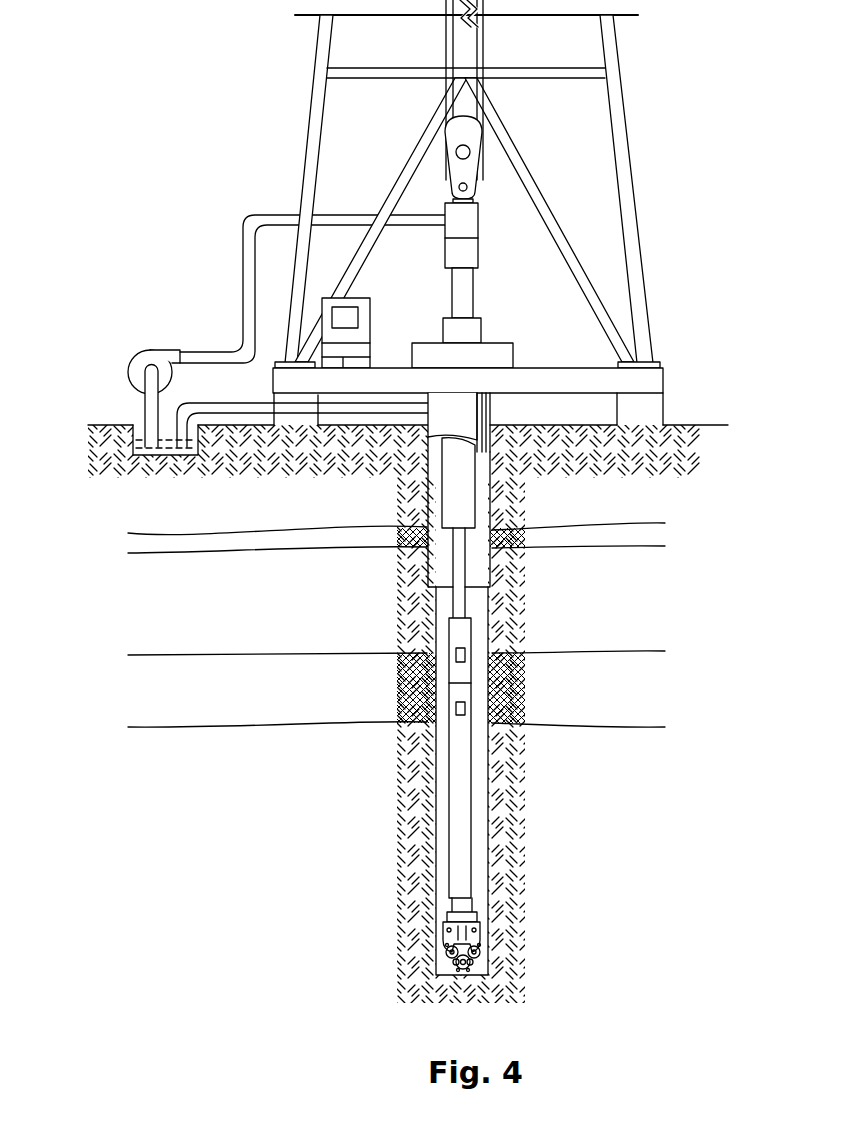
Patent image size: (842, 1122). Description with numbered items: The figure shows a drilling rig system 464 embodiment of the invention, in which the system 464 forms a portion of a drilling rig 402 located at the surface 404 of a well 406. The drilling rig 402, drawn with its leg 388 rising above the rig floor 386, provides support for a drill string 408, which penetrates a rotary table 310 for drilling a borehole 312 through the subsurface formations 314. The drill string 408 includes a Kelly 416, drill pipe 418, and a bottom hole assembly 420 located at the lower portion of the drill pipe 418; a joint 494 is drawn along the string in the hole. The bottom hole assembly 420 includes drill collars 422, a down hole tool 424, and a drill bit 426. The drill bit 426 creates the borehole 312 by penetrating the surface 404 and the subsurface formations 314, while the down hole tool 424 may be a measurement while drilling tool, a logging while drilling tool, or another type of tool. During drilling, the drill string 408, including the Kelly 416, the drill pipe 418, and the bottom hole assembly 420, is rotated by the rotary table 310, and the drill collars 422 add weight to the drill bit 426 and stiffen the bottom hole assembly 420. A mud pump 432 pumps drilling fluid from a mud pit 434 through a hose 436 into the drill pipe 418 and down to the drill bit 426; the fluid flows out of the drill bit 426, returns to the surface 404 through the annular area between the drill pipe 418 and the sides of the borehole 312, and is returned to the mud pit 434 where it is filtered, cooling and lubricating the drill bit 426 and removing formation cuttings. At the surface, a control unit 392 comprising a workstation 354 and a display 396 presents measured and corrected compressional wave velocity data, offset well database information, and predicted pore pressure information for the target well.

The drilling rig system 464 is at (426, 189).
The drilling rig 402 is at (522, 189).
The derrick leg 388 is at (620, 90).
The hose 436 is at (242, 258).
The mud pump 432 is at (158, 348).
The mud pit 434 is at (163, 458).
The drive system 392 is at (384, 305).
The workstation 354 is at (370, 310).
The display 396 is at (358, 318).
The Kelly 416 is at (472, 290).
The rotary table 310 is at (513, 355).
The rig floor 386 is at (665, 370).
The surface 404 is at (685, 423).
The well 406 is at (505, 419).
The drill collars 422 is at (475, 517).
The drill pipe 418 is at (462, 583).
The subsurface formations 314 is at (103, 531).
The tool joint 494 is at (449, 683).
The bottom hole assembly 420 is at (392, 583).
The drill string 408 is at (538, 764).
The borehole 312 is at (482, 842).
The down hole tool 424 is at (465, 887).
The drill bit 426 is at (470, 923).